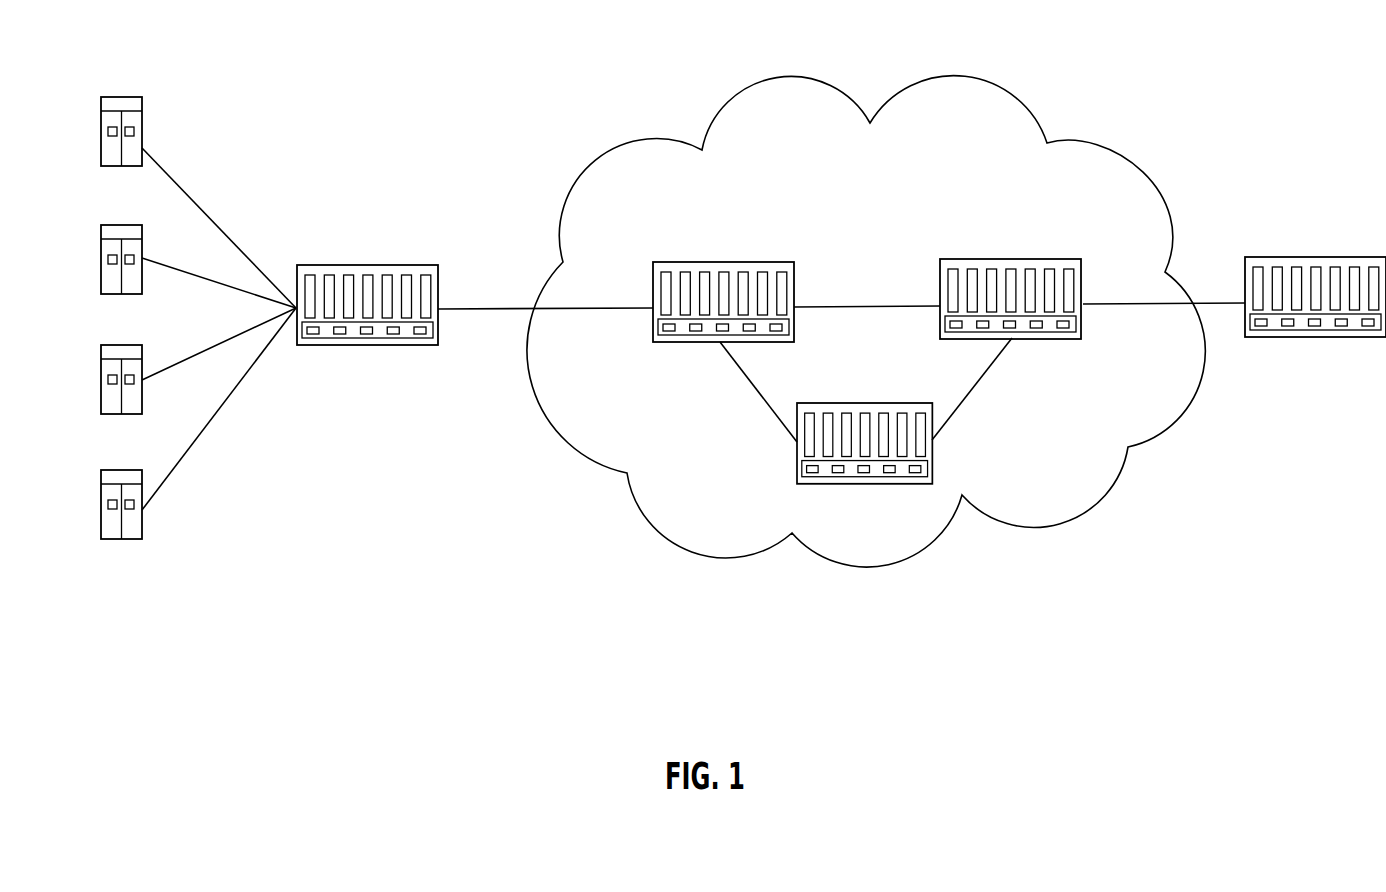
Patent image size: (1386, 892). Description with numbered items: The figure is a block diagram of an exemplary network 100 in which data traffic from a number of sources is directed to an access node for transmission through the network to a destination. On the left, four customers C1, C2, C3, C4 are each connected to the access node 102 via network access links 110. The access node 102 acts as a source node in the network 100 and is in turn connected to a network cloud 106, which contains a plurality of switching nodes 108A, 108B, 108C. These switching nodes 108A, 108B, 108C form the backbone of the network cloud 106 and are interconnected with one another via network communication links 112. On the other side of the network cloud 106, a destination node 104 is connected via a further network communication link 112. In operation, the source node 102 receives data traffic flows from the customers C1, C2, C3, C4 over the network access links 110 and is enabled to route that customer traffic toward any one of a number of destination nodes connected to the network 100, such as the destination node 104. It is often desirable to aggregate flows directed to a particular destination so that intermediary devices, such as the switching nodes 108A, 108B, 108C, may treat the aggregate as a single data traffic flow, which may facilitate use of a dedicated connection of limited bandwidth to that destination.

The network 100 is at (1078, 85).
The access node 102 is at (333, 265).
The destination node 104 is at (1360, 257).
The network cloud 106 is at (752, 90).
The switching node 108A is at (663, 262).
The switching node 108B is at (1063, 258).
The switching node 108C is at (820, 485).
The network access links 110 is at (193, 203).
The network communication links 112 is at (907, 305).
The customer C1 is at (100, 118).
The customer C2 is at (100, 246).
The customer C3 is at (100, 366).
The customer C4 is at (100, 491).